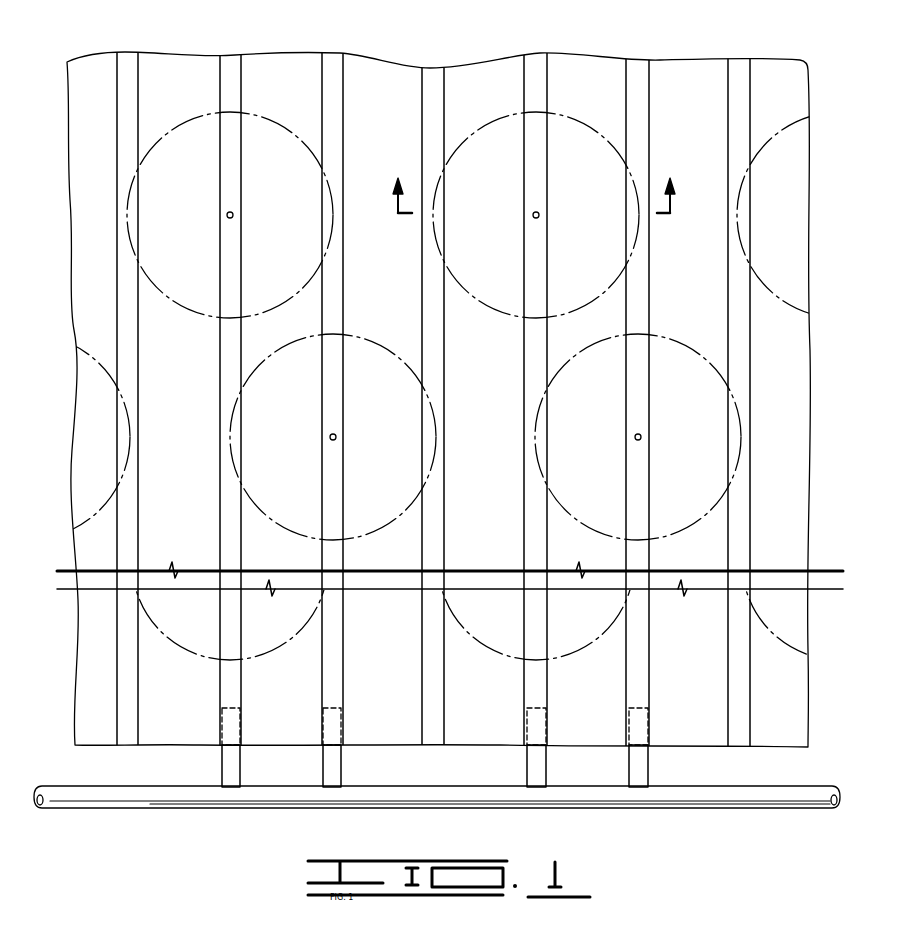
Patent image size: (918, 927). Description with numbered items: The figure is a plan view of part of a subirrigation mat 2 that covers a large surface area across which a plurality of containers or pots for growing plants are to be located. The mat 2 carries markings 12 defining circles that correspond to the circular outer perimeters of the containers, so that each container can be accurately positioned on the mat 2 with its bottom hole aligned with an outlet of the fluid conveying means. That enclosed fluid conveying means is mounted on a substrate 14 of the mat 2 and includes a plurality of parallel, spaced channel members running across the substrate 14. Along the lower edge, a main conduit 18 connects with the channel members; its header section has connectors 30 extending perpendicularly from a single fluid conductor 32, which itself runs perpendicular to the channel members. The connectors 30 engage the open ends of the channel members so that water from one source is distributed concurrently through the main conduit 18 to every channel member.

The subirrigation mat 2 is at (548, 111).
The markings 12 is at (459, 386).
The substrate 14 is at (376, 74).
The main conduit 18 is at (786, 787).
The connectors 30 is at (434, 747).
The fluid conductor 32 is at (700, 804).